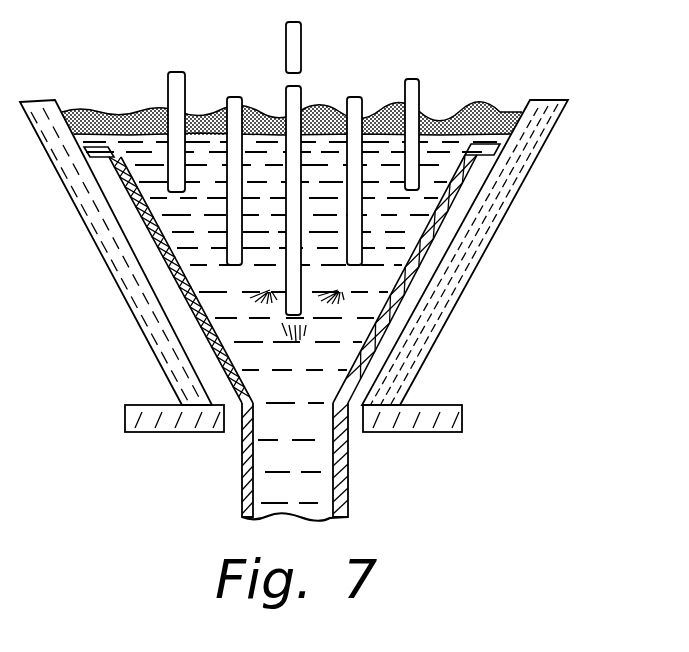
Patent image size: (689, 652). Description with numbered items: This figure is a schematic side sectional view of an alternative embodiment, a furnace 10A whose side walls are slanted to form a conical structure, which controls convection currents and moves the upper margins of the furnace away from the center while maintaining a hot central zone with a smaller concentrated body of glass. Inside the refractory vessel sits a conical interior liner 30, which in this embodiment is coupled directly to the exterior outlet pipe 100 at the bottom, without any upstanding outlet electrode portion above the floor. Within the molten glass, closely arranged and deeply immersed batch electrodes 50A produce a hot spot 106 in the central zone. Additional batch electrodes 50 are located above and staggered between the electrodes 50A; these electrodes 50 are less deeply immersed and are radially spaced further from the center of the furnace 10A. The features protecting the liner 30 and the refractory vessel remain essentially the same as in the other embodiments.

The furnace 10A is at (518, 233).
The interior liner 30 is at (496, 145).
The batch electrodes 50 is at (286, 50).
The batch electrodes 50A is at (352, 96).
The exterior outlet pipe 100 is at (340, 478).
The hot spot 106 is at (298, 322).